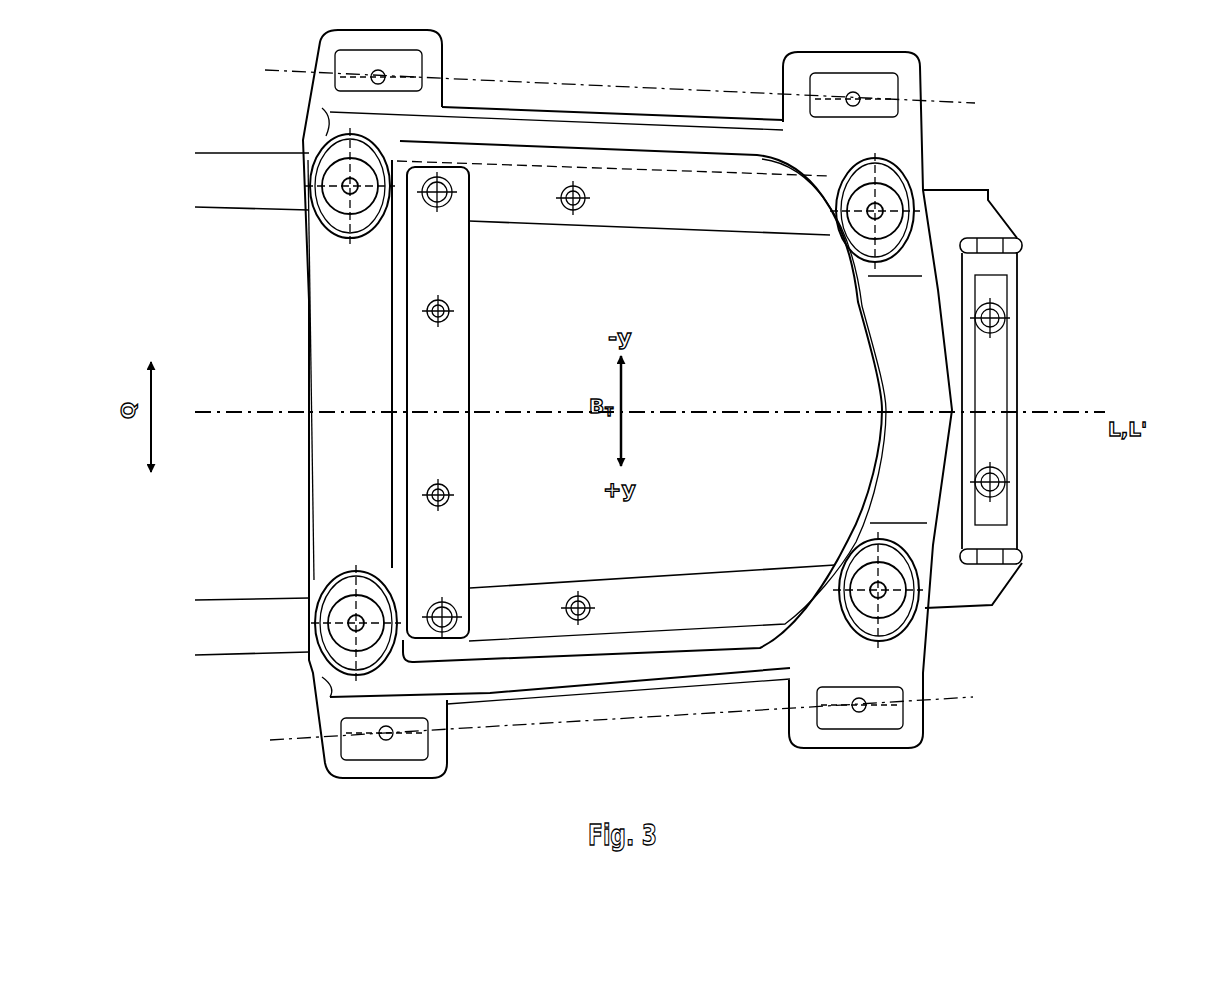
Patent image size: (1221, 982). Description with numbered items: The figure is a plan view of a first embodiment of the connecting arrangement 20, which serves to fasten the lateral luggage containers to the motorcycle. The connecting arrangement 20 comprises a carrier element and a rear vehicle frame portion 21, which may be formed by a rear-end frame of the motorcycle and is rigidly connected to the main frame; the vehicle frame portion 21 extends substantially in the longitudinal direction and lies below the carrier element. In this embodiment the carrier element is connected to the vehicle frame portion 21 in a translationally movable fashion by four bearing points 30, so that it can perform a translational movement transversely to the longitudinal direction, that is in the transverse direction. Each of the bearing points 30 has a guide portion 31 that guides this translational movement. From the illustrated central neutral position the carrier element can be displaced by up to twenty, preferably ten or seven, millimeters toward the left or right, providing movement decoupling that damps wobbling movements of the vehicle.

The connecting arrangement 20 is at (1115, 202).
The vehicle frame portion 21 is at (1005, 405).
The bearing point 30 is at (313, 158).
The guide portion 31 is at (907, 172).